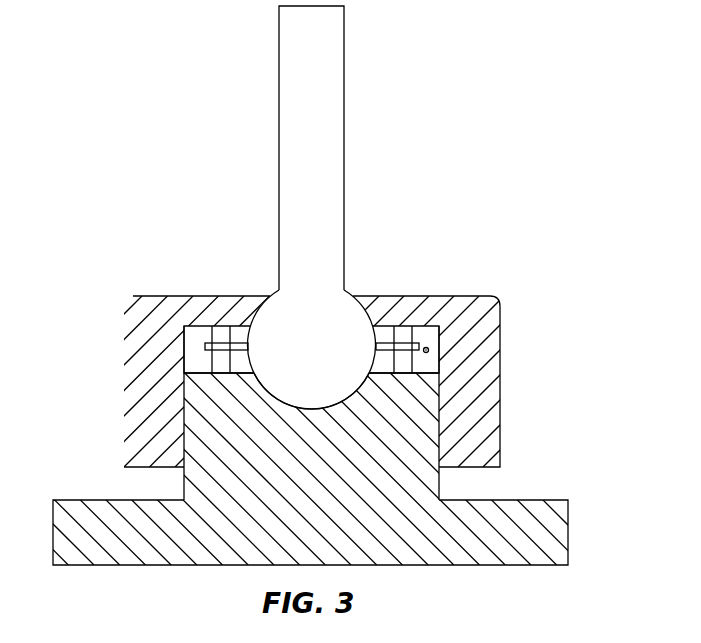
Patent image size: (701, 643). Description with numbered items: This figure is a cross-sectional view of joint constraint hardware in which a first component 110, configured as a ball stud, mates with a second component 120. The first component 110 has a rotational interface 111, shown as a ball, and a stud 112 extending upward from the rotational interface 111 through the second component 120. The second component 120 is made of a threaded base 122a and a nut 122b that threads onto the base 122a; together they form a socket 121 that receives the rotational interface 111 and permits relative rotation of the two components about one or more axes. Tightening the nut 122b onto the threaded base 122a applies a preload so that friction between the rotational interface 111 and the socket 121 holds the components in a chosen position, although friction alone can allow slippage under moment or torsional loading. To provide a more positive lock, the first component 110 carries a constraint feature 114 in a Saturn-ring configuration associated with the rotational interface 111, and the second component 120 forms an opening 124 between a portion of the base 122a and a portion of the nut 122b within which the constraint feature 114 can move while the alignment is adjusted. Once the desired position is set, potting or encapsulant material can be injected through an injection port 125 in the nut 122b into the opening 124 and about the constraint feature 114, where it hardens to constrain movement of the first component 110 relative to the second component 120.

The first component 110 is at (380, 90).
The stud 112 is at (344, 150).
The rotational interface 111 is at (394, 324).
The second component 120 is at (548, 370).
The nut 122b is at (123, 350).
The threaded base 122a is at (183, 482).
The opening 124 is at (177, 362).
The constraint feature 114 is at (202, 347).
The socket 121 is at (350, 398).
The injection port 125 is at (427, 350).